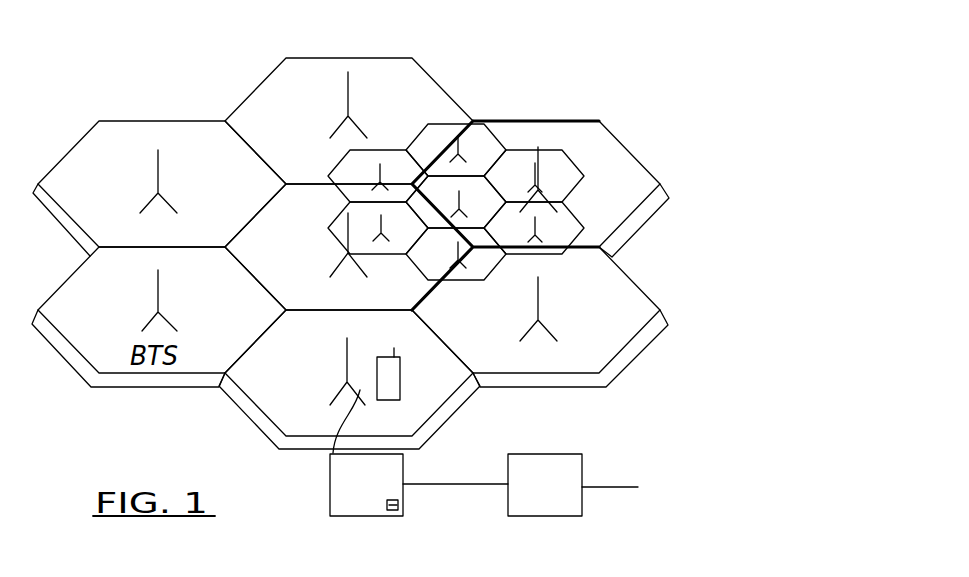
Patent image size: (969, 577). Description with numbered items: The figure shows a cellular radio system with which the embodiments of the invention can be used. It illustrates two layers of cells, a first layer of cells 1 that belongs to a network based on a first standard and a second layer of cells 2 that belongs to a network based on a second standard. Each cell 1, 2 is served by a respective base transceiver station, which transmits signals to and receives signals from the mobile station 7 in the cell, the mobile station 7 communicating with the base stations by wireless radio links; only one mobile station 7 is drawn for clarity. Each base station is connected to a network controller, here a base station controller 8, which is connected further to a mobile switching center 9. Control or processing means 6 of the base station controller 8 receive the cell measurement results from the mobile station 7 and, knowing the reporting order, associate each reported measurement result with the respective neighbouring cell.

The first layer of cells 1 is at (388, 95).
The second layer of cells 2 is at (489, 125).
The control or processing means 6 is at (402, 503).
The mobile station 7 is at (400, 400).
The base station controller 8 is at (339, 509).
The mobile switching center 9 is at (548, 515).